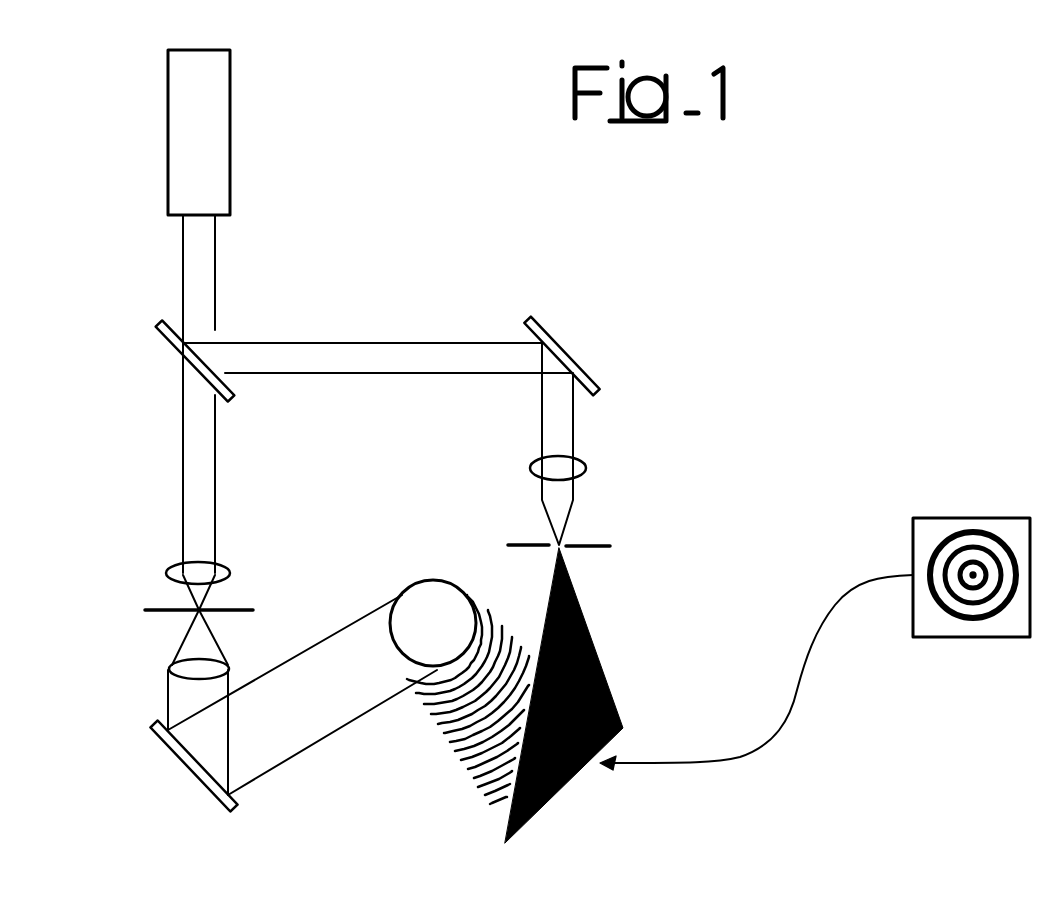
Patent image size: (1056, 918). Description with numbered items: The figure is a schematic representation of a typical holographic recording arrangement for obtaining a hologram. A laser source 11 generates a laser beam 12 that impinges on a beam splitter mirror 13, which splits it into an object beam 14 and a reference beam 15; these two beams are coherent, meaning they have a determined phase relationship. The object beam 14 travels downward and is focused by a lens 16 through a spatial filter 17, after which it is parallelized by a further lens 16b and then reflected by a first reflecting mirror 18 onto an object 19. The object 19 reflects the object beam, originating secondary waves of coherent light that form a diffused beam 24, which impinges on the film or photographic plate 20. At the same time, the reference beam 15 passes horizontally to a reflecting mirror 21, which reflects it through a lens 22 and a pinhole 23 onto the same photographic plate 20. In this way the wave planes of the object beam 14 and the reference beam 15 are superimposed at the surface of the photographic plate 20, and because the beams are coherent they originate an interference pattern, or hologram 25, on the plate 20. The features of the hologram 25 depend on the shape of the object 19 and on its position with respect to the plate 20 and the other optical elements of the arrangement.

The laser source 11 is at (225, 115).
The laser beam 12 is at (183, 250).
The beam splitter mirror 13 is at (162, 334).
The object beam 14 is at (215, 447).
The reference beam 15 is at (389, 343).
The lens 16 is at (179, 567).
The spatial filter 17 is at (162, 613).
The further lens 16b is at (233, 667).
The first reflecting mirror 18 is at (198, 778).
The object 19 is at (433, 595).
The photographic plate 20 is at (623, 728).
The reflecting mirror 21 is at (566, 353).
The lens 22 is at (587, 465).
The pinhole 23 is at (612, 546).
The diffused beam 24 is at (467, 763).
The hologram 25 is at (972, 519).